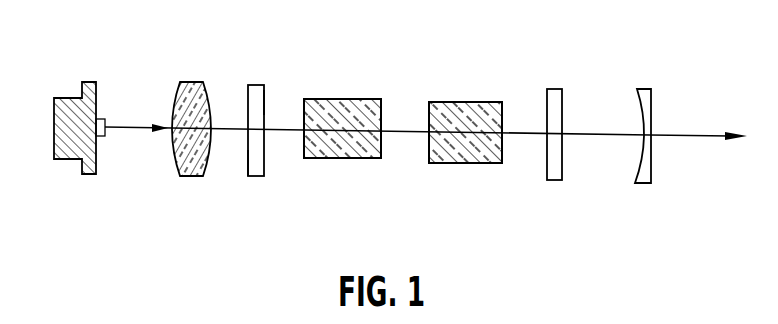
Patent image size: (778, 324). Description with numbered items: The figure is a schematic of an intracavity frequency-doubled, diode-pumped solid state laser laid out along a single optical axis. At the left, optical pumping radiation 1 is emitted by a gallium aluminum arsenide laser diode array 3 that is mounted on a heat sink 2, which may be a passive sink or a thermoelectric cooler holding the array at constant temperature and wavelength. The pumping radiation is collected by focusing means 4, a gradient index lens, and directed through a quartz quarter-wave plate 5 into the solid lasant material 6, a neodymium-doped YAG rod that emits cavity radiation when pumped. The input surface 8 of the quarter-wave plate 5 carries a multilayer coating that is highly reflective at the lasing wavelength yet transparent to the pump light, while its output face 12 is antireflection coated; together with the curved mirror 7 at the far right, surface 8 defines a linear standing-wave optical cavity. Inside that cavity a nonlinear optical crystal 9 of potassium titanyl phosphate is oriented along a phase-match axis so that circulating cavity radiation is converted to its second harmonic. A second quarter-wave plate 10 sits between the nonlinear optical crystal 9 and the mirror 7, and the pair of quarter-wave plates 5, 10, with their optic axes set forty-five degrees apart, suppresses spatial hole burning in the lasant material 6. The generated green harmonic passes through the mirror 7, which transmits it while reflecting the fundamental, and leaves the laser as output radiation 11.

The optical pumping radiation 1 is at (147, 130).
The heat sink 2 is at (72, 155).
The laser diode array 3 is at (104, 119).
The focusing means 4 is at (192, 177).
The quarter-wave plate 5 is at (257, 90).
The solid lasant material 6 is at (353, 158).
The mirror 7 is at (644, 90).
The surface 8 is at (248, 162).
The nonlinear optical crystal 9 is at (462, 115).
The second quarter-wave plate 10 is at (555, 180).
The output radiation 11 is at (680, 137).
The output face 12 is at (265, 102).